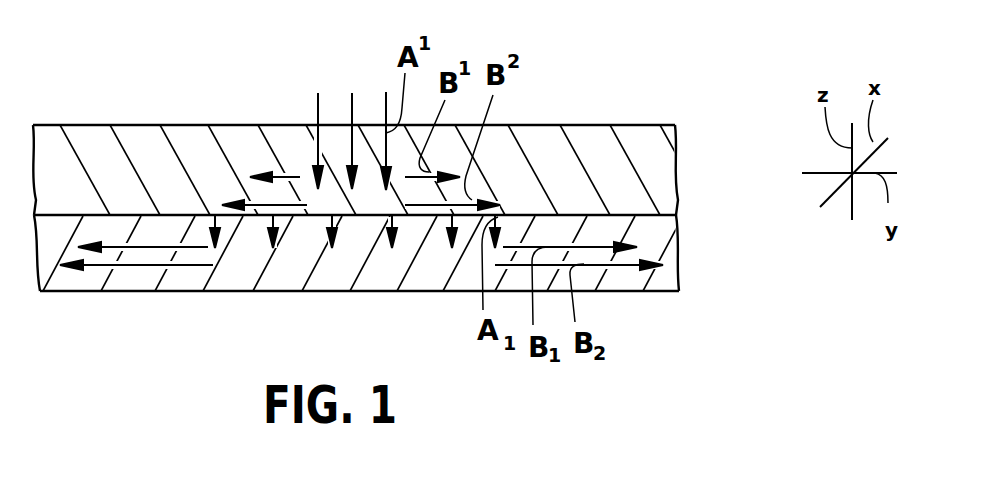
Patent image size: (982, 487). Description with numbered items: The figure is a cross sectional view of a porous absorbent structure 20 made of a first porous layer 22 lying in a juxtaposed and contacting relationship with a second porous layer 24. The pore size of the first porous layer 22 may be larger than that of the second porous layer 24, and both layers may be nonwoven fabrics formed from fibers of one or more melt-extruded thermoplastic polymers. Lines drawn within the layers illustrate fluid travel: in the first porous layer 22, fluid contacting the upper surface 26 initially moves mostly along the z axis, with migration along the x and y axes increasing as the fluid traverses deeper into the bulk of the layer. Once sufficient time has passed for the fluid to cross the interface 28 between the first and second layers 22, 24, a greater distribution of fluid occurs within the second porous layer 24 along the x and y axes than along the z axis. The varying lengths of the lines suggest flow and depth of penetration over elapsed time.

The porous absorbent structure 20 is at (576, 60).
The first porous layer 22 is at (678, 168).
The second porous layer 24 is at (680, 248).
The upper surface 26 is at (553, 124).
The interface 28 is at (645, 212).